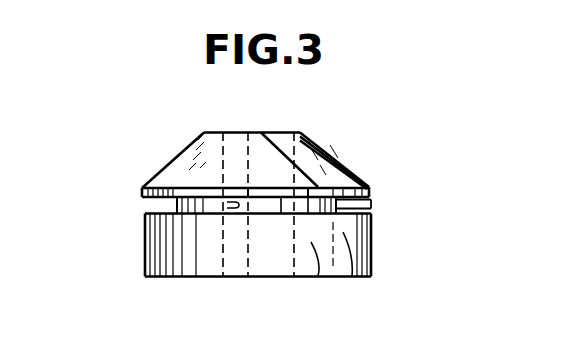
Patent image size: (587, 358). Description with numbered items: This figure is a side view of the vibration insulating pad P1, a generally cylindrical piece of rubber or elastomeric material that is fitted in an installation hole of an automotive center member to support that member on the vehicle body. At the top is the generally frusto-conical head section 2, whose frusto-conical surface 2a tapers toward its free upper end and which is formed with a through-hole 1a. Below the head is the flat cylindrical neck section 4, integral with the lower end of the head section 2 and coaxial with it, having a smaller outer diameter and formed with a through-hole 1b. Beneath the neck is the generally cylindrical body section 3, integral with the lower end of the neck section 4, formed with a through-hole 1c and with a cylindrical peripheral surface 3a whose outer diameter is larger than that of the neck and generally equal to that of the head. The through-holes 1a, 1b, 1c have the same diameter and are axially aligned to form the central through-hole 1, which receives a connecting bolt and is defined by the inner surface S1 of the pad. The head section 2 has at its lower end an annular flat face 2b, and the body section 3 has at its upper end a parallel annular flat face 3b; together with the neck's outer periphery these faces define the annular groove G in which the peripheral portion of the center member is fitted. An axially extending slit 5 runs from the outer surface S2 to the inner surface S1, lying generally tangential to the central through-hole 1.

The central through-hole 1 is at (226, 248).
The through-hole 1a is at (223, 162).
The through-hole 1b is at (176, 207).
The through-hole 1c is at (228, 224).
The head section 2 is at (364, 186).
The frusto-conical surface 2a is at (192, 163).
The annular flat face 2b is at (366, 199).
The body section 3 is at (373, 263).
The cylindrical peripheral surface 3a is at (152, 262).
The annular flat face 3b is at (372, 216).
The neck section 4 is at (369, 208).
The slit 5 is at (317, 278).
The annular groove G is at (147, 216).
The inner surface S1 is at (294, 145).
The outer surface S2 is at (354, 278).
The vibration insulating pad P1 is at (372, 147).